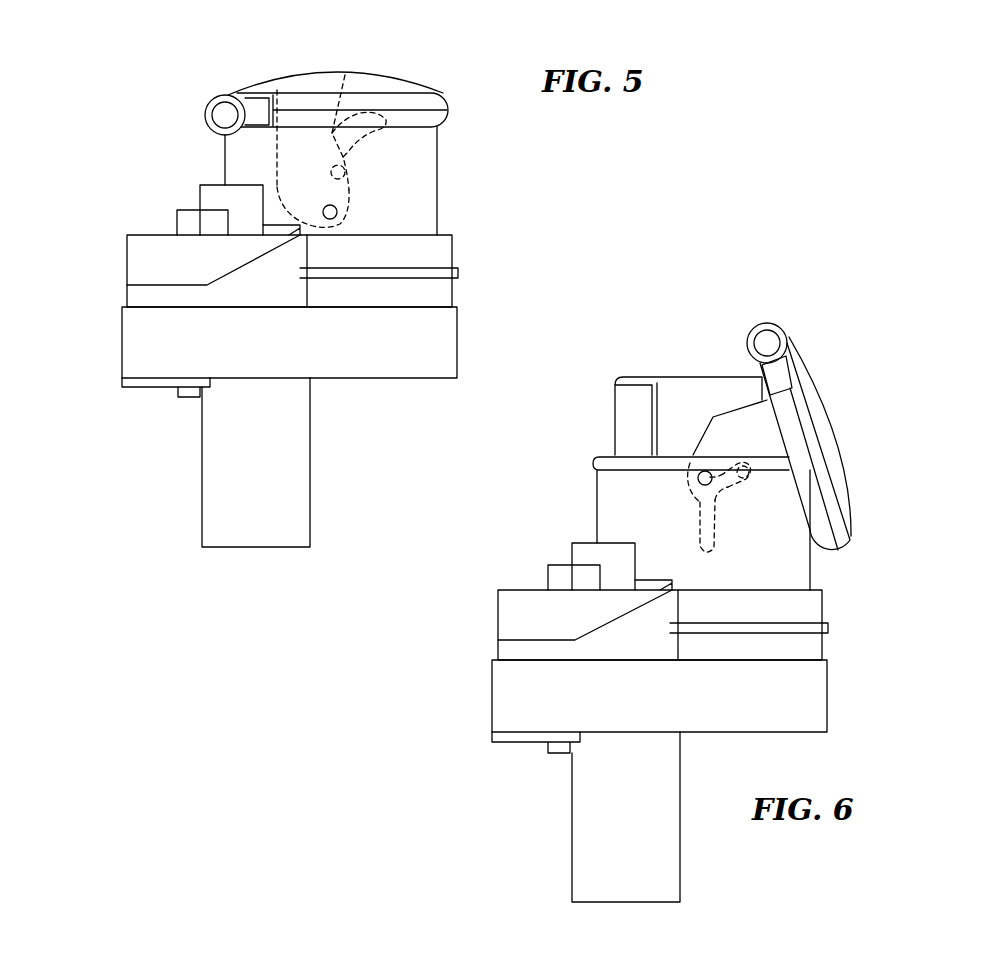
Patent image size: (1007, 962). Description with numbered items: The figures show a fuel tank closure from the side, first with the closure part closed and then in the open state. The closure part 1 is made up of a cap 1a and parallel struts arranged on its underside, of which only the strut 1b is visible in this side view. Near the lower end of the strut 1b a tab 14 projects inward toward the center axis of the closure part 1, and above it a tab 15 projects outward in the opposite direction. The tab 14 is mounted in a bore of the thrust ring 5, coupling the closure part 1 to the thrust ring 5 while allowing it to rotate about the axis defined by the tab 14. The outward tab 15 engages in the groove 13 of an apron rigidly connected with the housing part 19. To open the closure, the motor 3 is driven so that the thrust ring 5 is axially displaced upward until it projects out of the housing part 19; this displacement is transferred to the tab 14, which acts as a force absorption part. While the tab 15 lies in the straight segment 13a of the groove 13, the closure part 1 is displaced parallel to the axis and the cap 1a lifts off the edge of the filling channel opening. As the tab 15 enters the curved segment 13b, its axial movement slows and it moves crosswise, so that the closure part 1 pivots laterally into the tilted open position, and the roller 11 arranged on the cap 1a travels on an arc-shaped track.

In FIG. 5, the closure part 1 is at (338, 71).
In FIG. 6, the closure part 1 is at (850, 430).
In FIG. 5, the cap 1a is at (387, 82).
In FIG. 6, the cap 1a is at (835, 420).
In FIG. 5, the strut 1b is at (297, 143).
In FIG. 6, the strut 1b is at (750, 427).
In FIG. 5, the motor 3 is at (252, 487).
In FIG. 6, the motor 3 is at (622, 835).
In FIG. 6, the thrust ring 5 is at (680, 377).
In FIG. 5, the roller 11 is at (225, 110).
In FIG. 6, the roller 11 is at (766, 342).
In FIG. 5, the groove 13 is at (350, 151).
In FIG. 6, the groove 13 is at (630, 514).
In FIG. 5, the straight segment 13a is at (327, 205).
In FIG. 6, the straight segment 13a is at (703, 542).
In FIG. 5, the curved segment 13b is at (355, 136).
In FIG. 6, the curved segment 13b is at (727, 488).
In FIG. 5, the tab 14 is at (324, 214).
In FIG. 6, the tab 14 is at (700, 472).
In FIG. 5, the tab 15 is at (345, 172).
In FIG. 6, the tab 15 is at (745, 478).
In FIG. 5, the housing part 19 is at (427, 345).
In FIG. 6, the housing part 19 is at (798, 702).